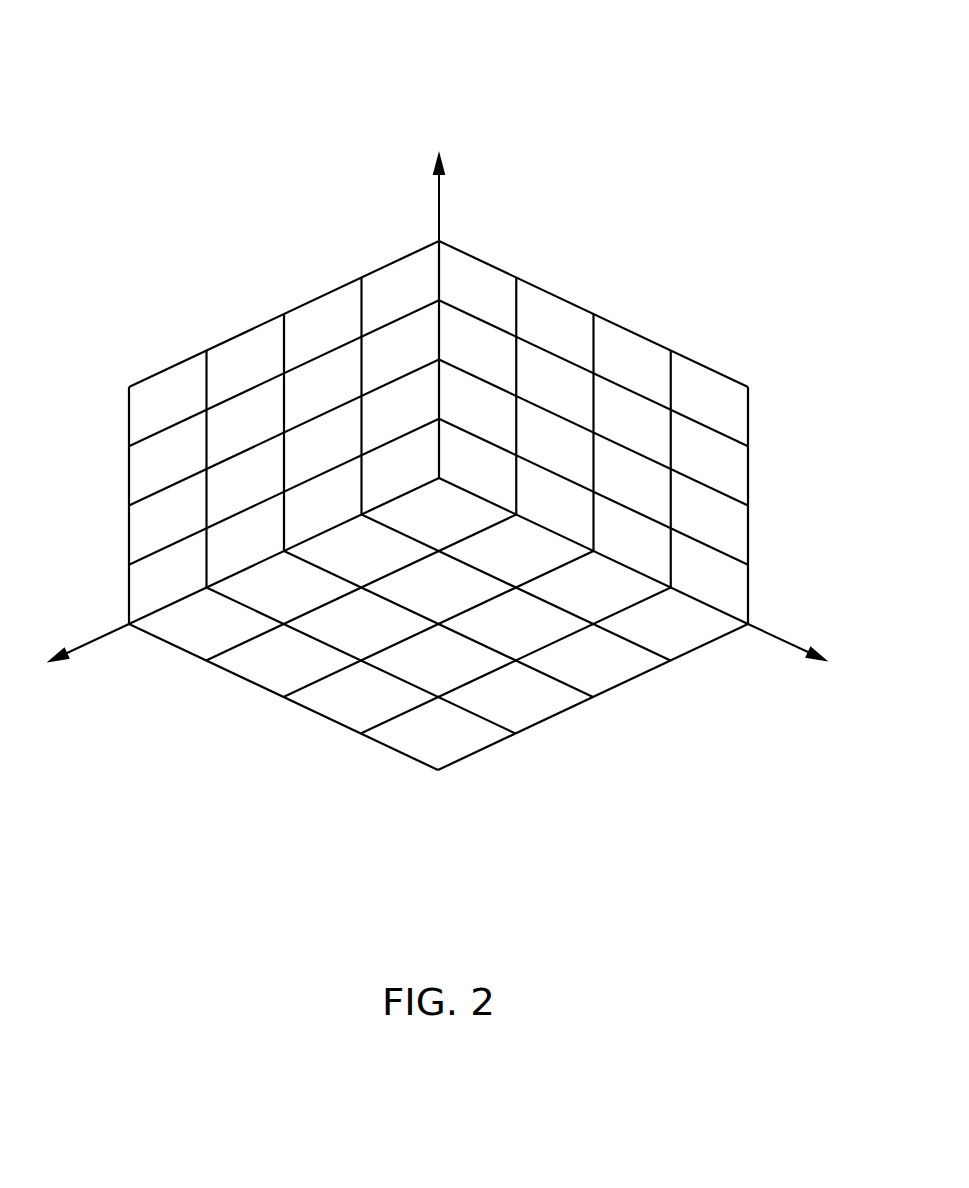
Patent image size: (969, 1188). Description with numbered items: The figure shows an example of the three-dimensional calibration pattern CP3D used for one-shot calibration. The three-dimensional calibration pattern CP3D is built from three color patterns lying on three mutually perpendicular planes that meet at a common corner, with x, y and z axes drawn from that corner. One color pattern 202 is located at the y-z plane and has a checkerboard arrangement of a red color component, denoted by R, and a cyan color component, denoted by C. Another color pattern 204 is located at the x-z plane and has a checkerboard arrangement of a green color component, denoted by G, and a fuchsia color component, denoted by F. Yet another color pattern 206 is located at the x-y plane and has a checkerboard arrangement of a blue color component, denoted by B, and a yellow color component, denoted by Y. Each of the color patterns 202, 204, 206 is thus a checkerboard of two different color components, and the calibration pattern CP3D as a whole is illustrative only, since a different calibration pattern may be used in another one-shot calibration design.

The 3D calibration pattern CP3D is at (641, 70).
The color pattern 202 is at (749, 414).
The color pattern 204 is at (127, 414).
The color pattern 206 is at (243, 680).